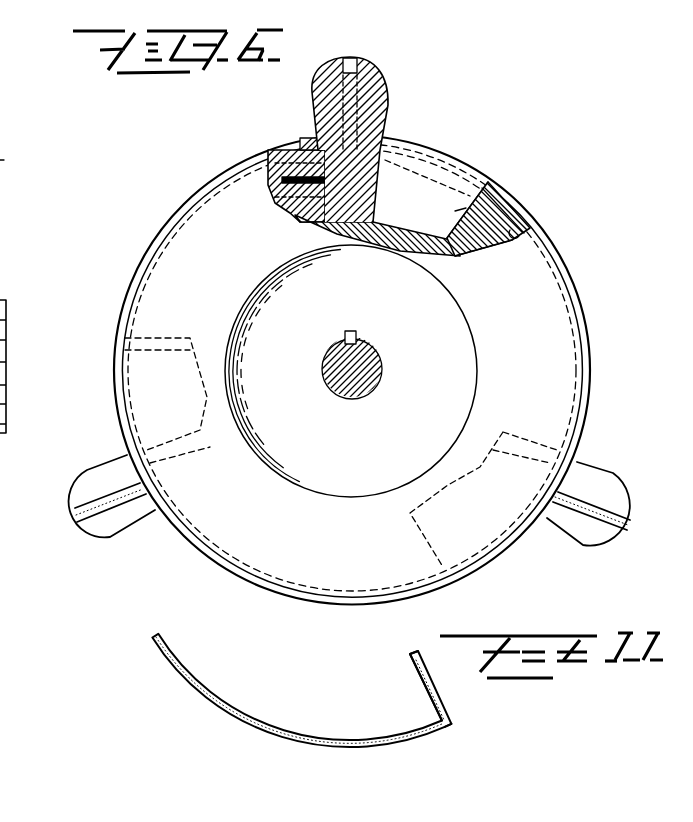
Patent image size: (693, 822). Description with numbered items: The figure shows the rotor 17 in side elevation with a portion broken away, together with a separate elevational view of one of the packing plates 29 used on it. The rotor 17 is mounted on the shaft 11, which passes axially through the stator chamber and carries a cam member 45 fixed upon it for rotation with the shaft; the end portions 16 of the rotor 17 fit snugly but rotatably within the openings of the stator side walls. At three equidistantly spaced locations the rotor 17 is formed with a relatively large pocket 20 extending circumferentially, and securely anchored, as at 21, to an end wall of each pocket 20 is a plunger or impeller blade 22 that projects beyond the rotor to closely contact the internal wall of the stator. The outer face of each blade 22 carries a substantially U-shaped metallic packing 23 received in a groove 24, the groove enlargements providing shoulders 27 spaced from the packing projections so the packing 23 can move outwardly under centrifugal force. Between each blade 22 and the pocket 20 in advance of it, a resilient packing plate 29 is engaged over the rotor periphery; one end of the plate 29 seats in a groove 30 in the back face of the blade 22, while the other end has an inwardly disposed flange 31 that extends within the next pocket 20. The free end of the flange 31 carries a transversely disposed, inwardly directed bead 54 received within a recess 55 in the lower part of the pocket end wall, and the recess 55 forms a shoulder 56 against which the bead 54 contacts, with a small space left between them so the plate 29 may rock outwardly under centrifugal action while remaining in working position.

In FIG. 6, the shaft 11 is at (376, 368).
In FIG. 6, the end portions 16 is at (351, 388).
In FIG. 6, the rotor 17 is at (218, 232).
In FIG. 6, the pocket 20 is at (430, 188).
In FIG. 6, the anchorage 21 is at (456, 170).
In FIG. 6, the impeller blade 22 is at (308, 114).
In FIG. 6, the metallic packing 23 is at (352, 58).
In FIG. 6, the groove 24 is at (390, 75).
In FIG. 6, the shoulders 27 is at (14, 144).
In FIG. 6, the packing plate 29 is at (293, 141).
In FIG. 11, the packing plate 29 is at (237, 710).
In FIG. 6, the groove 30 is at (523, 228).
In FIG. 6, the flange 31 is at (370, 558).
In FIG. 11, the flange 31 is at (440, 700).
In FIG. 6, the cam member 45 is at (5, 412).
In FIG. 6, the bead 54 is at (455, 252).
In FIG. 11, the bead 54 is at (408, 665).
In FIG. 6, the recess 55 is at (478, 253).
In FIG. 6, the shoulder 56 is at (497, 196).